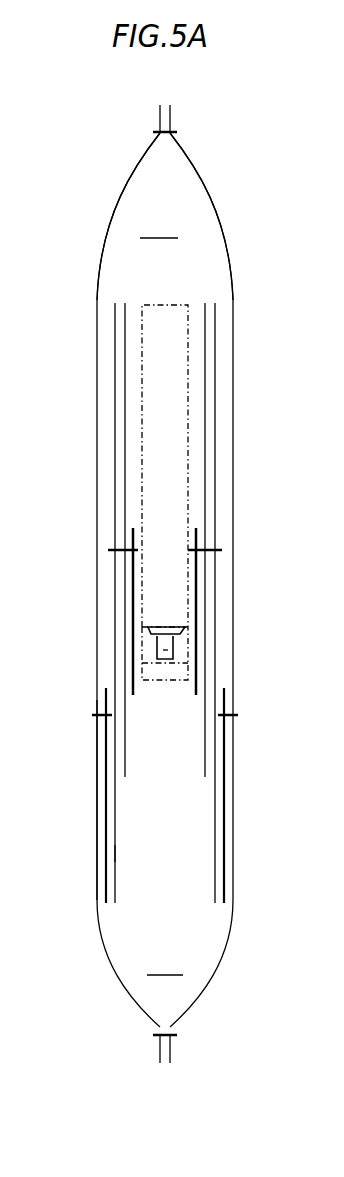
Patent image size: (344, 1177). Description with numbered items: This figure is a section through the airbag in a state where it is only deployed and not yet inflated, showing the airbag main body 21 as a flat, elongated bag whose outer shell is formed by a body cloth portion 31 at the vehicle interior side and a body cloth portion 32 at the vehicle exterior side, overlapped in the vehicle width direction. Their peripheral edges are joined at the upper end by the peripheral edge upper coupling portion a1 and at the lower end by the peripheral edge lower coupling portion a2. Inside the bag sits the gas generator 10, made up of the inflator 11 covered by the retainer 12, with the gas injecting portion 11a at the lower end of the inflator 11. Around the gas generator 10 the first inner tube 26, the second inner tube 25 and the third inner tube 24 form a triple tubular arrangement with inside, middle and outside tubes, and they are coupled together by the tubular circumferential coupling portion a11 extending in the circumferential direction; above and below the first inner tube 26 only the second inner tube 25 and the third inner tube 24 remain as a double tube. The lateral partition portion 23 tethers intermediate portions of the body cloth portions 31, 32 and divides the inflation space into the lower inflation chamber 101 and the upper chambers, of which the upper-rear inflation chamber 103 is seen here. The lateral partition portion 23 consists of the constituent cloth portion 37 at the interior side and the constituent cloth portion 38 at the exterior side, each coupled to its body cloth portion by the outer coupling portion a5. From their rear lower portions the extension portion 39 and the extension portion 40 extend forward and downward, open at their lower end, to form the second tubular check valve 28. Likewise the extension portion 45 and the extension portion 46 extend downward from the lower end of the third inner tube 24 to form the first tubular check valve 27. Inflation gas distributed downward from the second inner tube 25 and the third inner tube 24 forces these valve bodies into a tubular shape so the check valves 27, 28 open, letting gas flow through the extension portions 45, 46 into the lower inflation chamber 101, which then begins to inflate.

The gas generator 10 is at (295, 578).
The inflator 11 is at (182, 630).
The gas injecting portion 11a is at (168, 648).
The retainer 12 is at (180, 573).
The airbag main body 21 is at (132, 173).
The lateral partition portion 23 is at (102, 732).
The third inner tube 24 is at (113, 680).
The second inner tube 25 is at (125, 640).
The first inner tube 26 is at (133, 597).
The first tubular check valve 27 is at (115, 882).
The second tubular check valve 28 is at (107, 872).
The body cloth portion 31 is at (103, 235).
The body cloth portion 32 is at (228, 238).
The constituent cloth portion 37 is at (105, 757).
The constituent cloth portion 38 is at (223, 753).
The extension portion 39 is at (107, 833).
The extension portion 40 is at (223, 825).
The extension portion 45 is at (117, 852).
The extension portion 46 is at (215, 877).
The lower inflation chamber 101 is at (166, 960).
The upper-rear inflation chamber 103 is at (159, 225).
The peripheral edge upper coupling portion a1 is at (156, 131).
The peripheral edge lower coupling portion a2 is at (157, 1036).
The outer coupling portion a5 is at (92, 715).
The tubular circumferential coupling portion a11 is at (110, 550).